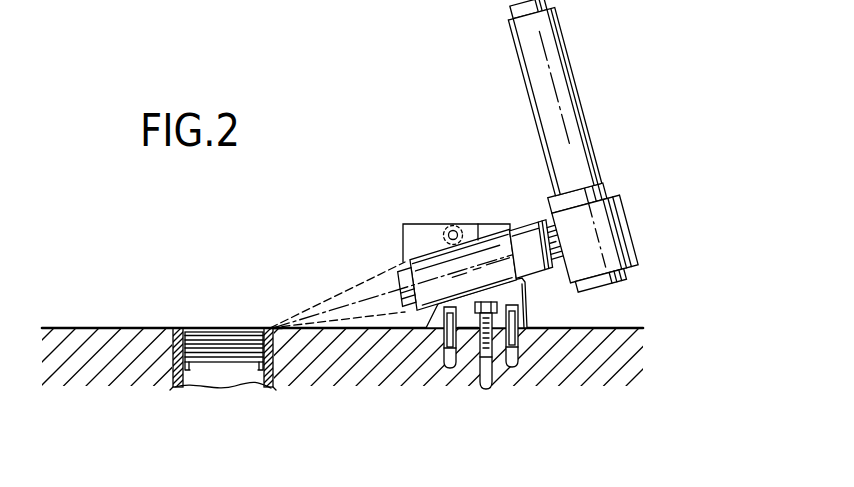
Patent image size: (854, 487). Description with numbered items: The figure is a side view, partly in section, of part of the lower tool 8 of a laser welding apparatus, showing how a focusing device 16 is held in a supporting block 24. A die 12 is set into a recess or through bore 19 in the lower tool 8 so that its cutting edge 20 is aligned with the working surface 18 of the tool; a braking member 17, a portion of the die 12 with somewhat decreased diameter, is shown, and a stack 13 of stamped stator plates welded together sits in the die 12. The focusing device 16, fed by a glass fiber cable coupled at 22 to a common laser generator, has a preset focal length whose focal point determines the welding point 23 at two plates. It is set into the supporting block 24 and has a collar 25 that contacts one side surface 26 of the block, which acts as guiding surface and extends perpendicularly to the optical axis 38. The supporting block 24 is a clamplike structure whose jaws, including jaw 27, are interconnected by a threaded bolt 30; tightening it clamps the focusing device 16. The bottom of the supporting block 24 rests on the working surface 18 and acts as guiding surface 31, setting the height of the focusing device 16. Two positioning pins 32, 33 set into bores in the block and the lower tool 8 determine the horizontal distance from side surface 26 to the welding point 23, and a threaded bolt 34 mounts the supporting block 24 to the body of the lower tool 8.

The lower tool 8 is at (72, 348).
The working surface 18 is at (118, 327).
The cutting edge 20 is at (182, 329).
The welding point 23 is at (270, 327).
The braking member 17 is at (173, 385).
The stack 13 is at (213, 362).
The recess or through bore 19 is at (237, 377).
The die 12 is at (268, 388).
The optical axis 38 is at (357, 300).
The jaw 27 is at (422, 242).
The supporting block 24 is at (410, 220).
The threaded bolt 30 is at (452, 229).
The collar 25 is at (528, 242).
The side surface 26 is at (532, 303).
The focusing device 16 is at (644, 270).
The glass fiber cable coupling 22 is at (513, 16).
The positioning pin 32 is at (443, 368).
The guiding surface 31 is at (467, 333).
The threaded bolt 34 is at (495, 373).
The positioning pin 33 is at (517, 343).